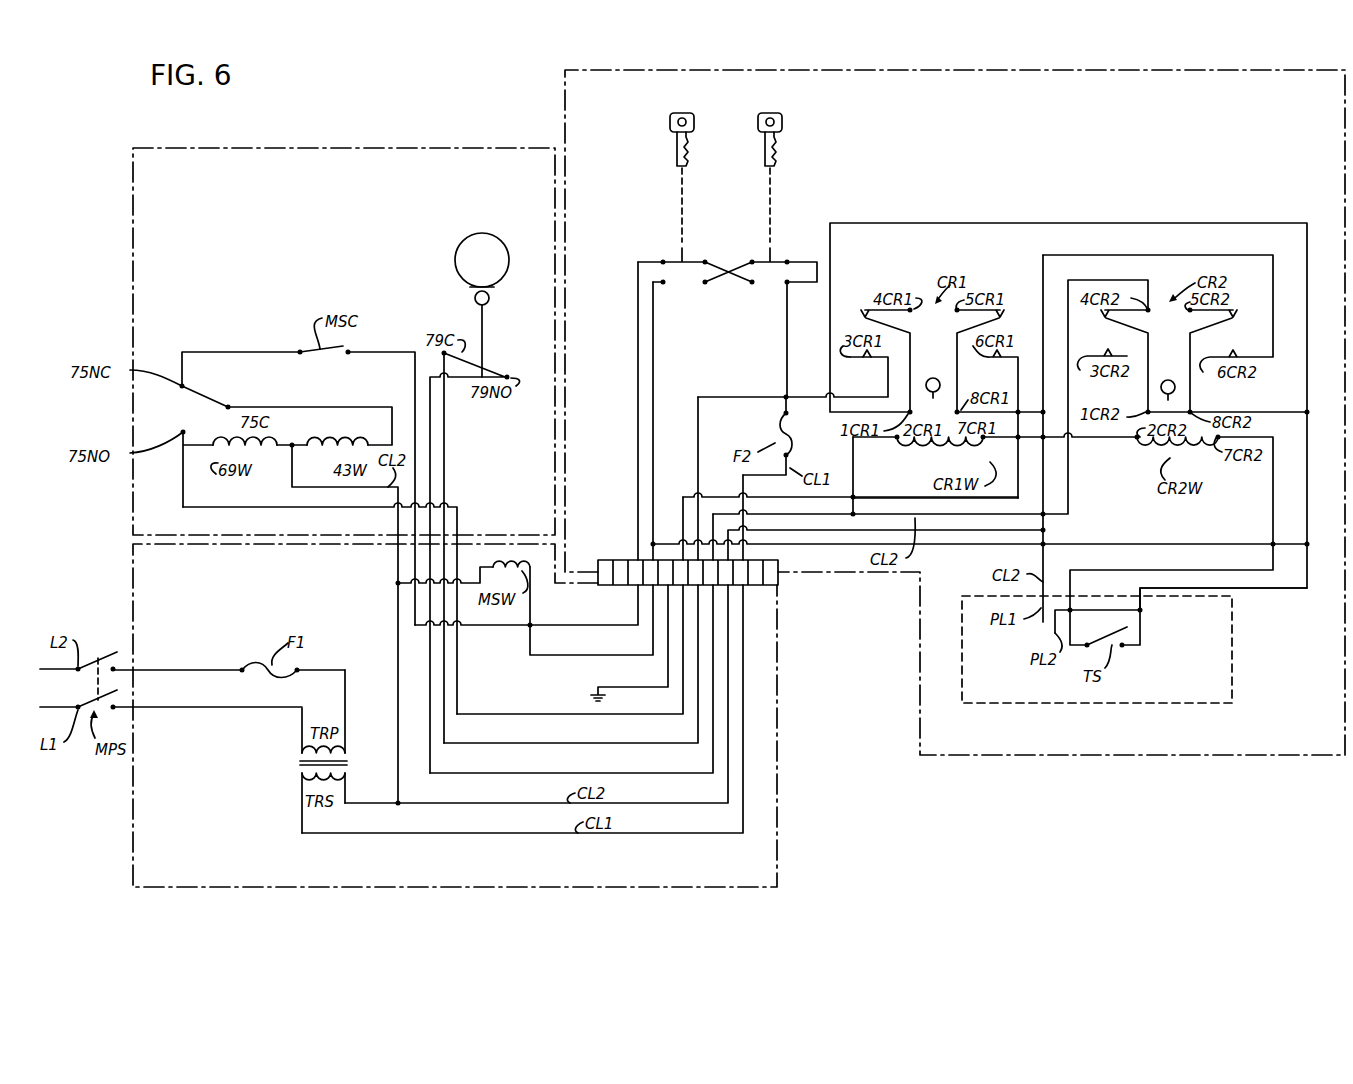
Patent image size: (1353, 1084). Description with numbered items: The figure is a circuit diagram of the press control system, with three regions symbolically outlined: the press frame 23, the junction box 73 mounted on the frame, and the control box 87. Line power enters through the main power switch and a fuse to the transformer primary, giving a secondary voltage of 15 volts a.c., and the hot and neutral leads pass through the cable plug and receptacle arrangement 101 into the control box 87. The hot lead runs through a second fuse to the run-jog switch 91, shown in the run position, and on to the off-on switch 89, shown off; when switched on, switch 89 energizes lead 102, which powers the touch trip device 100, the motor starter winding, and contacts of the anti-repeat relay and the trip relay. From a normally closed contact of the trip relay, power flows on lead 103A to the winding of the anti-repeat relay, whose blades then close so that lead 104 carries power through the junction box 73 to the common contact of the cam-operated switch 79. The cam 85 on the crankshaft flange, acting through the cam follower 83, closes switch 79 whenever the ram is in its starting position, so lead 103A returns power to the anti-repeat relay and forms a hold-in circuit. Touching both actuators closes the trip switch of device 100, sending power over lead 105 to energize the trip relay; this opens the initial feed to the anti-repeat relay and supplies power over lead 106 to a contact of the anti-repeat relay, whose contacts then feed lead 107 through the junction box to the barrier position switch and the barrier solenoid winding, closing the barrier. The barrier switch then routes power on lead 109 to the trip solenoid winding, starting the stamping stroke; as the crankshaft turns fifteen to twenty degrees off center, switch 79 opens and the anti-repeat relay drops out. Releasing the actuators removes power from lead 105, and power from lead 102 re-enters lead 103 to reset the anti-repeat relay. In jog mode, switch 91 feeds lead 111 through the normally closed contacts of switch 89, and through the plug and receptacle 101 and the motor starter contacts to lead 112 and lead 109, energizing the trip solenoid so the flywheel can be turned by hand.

The press frame 23 is at (536, 148).
The junction box 73 is at (708, 891).
The control box 87 is at (1076, 758).
The touch trip device 100 is at (1234, 682).
The cable plug and receptacle arrangement 101 is at (778, 585).
The 15 VAC 15 is at (201, 401).
The lead 112 is at (214, 352).
The lead 109 is at (312, 407).
The cam 85 is at (472, 289).
The cam follower 83 is at (477, 305).
The switch 79 is at (488, 363).
The lead 104 is at (445, 455).
The lead 103A is at (432, 472).
The lead 111 is at (413, 392).
The lead 102 is at (654, 356).
The lead 107 is at (572, 714).
The off-on switch 89 is at (678, 254).
The run-jog switch 91 is at (775, 256).
The lead 103 is at (856, 478).
The lead 106 is at (1182, 256).
The lead 105 is at (1162, 571).